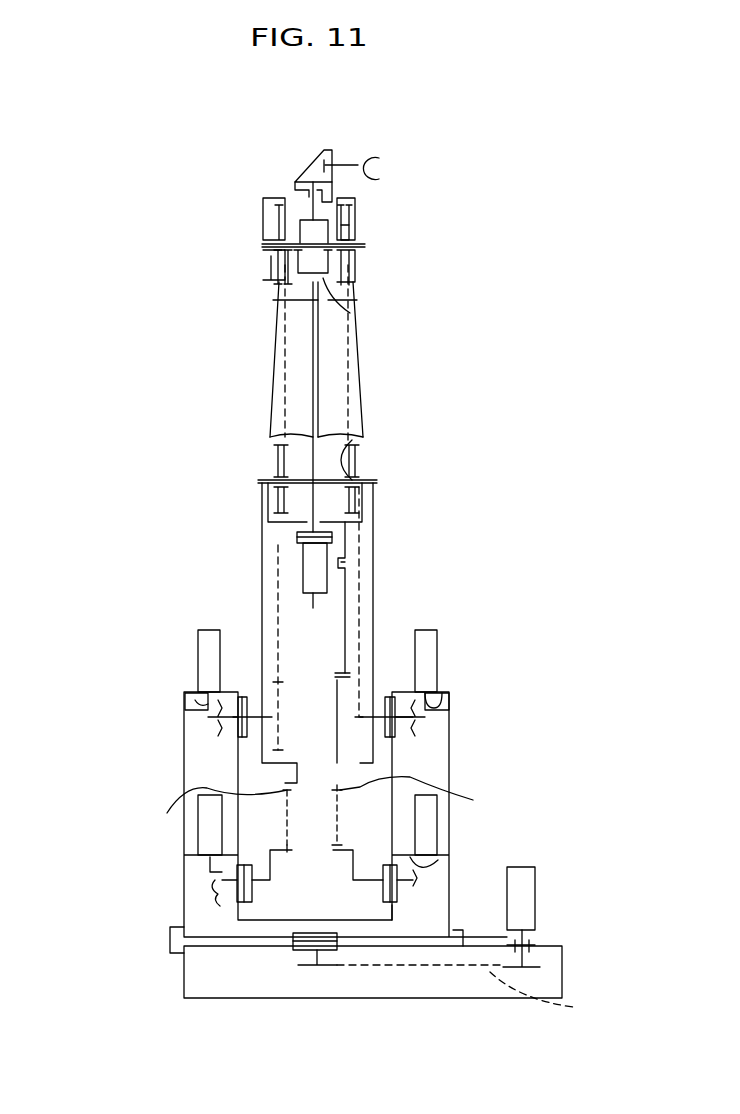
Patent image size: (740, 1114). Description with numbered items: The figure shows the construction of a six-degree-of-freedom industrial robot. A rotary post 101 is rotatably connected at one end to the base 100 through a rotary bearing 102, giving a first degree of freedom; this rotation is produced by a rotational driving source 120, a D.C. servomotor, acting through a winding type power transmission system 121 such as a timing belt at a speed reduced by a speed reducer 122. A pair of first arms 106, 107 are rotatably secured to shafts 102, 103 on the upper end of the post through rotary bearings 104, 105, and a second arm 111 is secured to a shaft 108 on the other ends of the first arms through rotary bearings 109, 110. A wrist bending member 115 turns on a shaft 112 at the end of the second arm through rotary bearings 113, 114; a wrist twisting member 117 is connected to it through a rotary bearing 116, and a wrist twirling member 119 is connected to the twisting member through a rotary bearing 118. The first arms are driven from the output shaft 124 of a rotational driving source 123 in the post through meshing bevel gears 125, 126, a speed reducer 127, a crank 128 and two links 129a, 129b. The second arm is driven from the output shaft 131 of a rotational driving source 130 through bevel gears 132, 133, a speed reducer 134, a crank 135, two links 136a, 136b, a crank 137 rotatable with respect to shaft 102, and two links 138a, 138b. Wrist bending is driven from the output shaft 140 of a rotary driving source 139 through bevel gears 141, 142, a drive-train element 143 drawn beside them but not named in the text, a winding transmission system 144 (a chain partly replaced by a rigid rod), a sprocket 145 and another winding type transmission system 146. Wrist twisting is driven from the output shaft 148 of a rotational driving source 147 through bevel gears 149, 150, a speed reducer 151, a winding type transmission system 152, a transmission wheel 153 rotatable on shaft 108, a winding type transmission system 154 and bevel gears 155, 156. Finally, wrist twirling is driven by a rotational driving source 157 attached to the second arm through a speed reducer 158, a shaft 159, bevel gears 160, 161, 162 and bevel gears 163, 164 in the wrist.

The base 100 is at (184, 962).
The rotary post 101 is at (184, 779).
The rotary bearing 102 is at (362, 717).
The shaft 103 is at (255, 713).
The rotary bearing 104 is at (395, 735).
The rotary bearing 105 is at (262, 725).
The first arm 106 is at (262, 576).
The first arm 107 is at (375, 516).
The shaft 108 is at (363, 443).
The rotary bearing 109 is at (378, 481).
The rotary bearing 110 is at (272, 465).
The second arm 111 is at (270, 422).
The shaft 112 is at (357, 234).
The rotary bearing 113 is at (344, 250).
The rotary bearing 114 is at (274, 270).
The wrist bending member 115 is at (262, 245).
The rotary bearing 116 is at (303, 197).
The wrist twisting member 117 is at (322, 158).
The rotary bearing 118 is at (348, 190).
The wrist twirling member 119 is at (343, 165).
The rotational driving source 120 is at (536, 897).
The winding type power transmission system 121 is at (575, 1004).
The speed reducer 122 is at (302, 950).
The rotational driving source 123 is at (198, 832).
The output shaft 124 is at (208, 866).
The bevel gear 125 is at (222, 880).
The bevel gear 126 is at (208, 906).
The speed reducer 127 is at (256, 900).
The crank 128 is at (270, 878).
The link 129a is at (173, 816).
The link 129b is at (173, 816).
The rotational driving source 130 is at (437, 823).
The output shaft 131 is at (438, 858).
The bevel gear 132 is at (420, 876).
The bevel gear 133 is at (398, 890).
The speed reducer 134 is at (392, 905).
The crank 135 is at (353, 880).
The link 136a is at (467, 797).
The link 136b is at (467, 797).
The crank 137 is at (362, 640).
The link 138a is at (442, 597).
The link 138b is at (350, 580).
The rotary driving source 139 is at (198, 645).
The output shaft 140 is at (192, 698).
The bevel gear 141 is at (194, 703).
The bevel gear 142 is at (217, 712).
The clutch 143 is at (236, 726).
The winding transmission system 144 is at (266, 600).
The sprocket 145 is at (272, 493).
The winding type transmission system 146 is at (280, 349).
The rotational driving source 147 is at (437, 643).
The output shaft 148 is at (438, 693).
The bevel gear 149 is at (446, 703).
The bevel gear 150 is at (418, 716).
The speed reducer 151 is at (398, 728).
The winding type transmission system 152 is at (362, 553).
The transmission wheel 153 is at (358, 500).
The winding type transmission system 154 is at (352, 400).
The bevel gear 155 is at (352, 284).
The bevel gear 156 is at (356, 204).
The rotational driving source 157 is at (313, 599).
The speed reducer 158 is at (296, 538).
The shaft 159 is at (276, 442).
The bevel gear 160 is at (350, 312).
The bevel gear 161 is at (268, 256).
The bevel gear 162 is at (298, 226).
The bevel gear 163 is at (298, 184).
The bevel gear 164 is at (317, 170).